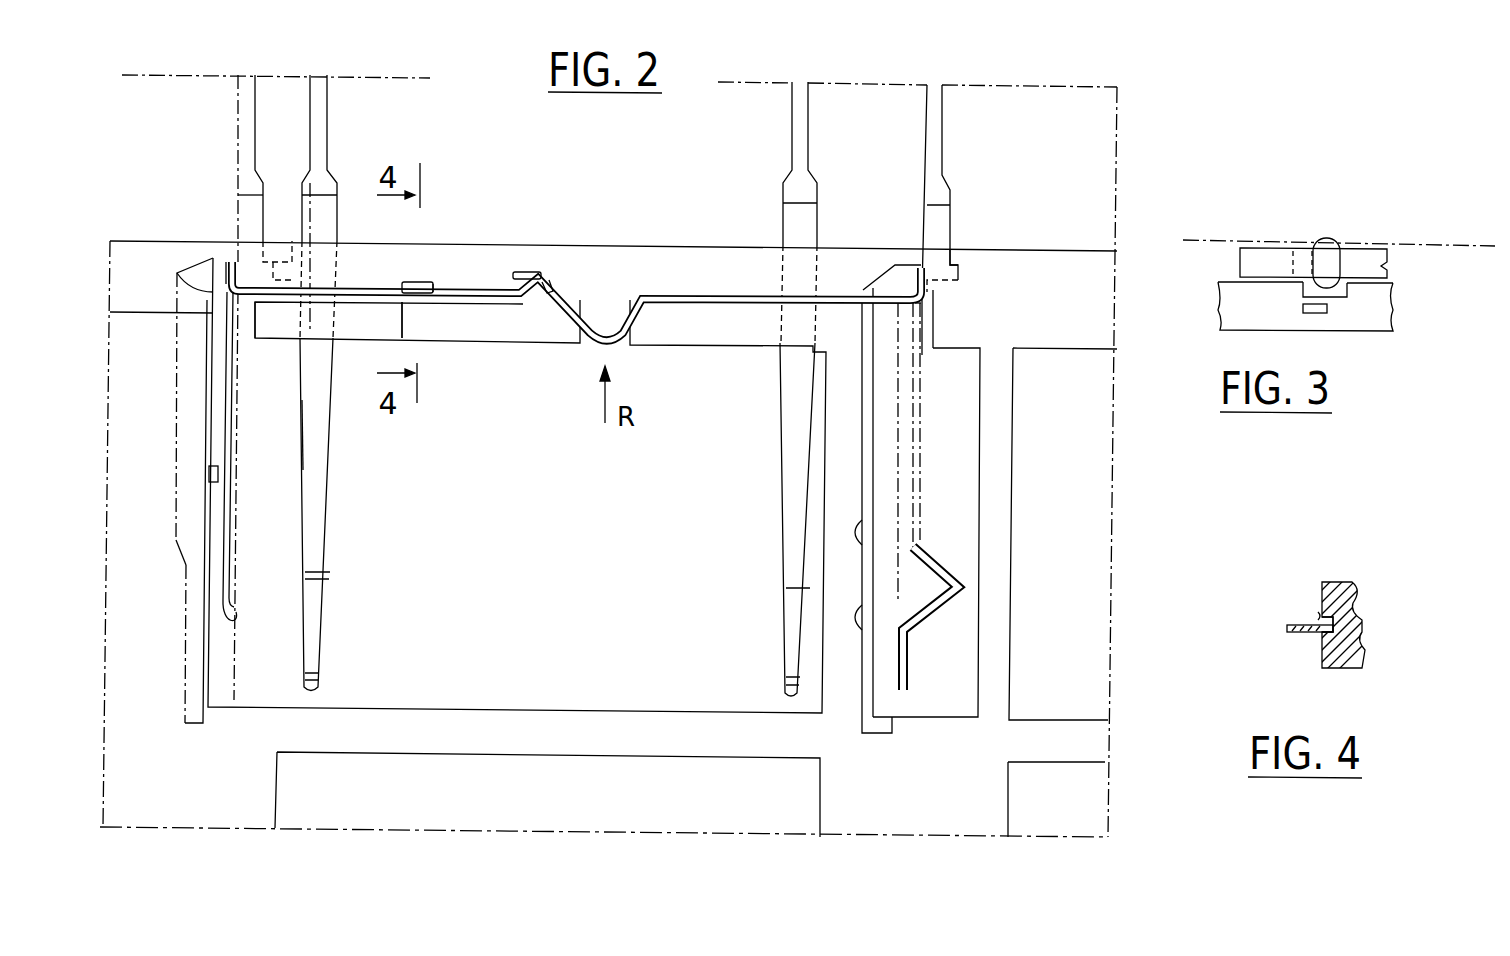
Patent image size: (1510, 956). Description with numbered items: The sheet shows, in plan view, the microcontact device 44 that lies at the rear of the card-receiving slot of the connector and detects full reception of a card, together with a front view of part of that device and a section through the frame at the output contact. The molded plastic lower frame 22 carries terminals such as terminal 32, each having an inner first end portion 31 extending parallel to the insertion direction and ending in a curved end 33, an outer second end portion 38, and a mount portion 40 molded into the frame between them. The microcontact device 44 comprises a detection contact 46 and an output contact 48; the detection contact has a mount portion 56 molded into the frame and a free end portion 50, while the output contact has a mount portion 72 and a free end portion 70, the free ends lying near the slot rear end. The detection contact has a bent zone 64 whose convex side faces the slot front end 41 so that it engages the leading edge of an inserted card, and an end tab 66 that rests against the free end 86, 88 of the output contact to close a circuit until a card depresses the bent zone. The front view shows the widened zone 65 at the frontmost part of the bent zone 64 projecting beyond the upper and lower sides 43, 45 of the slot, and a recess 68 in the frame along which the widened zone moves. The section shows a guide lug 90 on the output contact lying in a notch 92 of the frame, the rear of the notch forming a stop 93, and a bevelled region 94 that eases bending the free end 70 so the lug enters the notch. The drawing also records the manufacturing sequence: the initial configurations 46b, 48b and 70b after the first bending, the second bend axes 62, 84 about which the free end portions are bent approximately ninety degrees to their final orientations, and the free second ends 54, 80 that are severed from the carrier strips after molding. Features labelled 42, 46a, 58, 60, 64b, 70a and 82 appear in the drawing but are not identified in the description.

In FIG. 2, the lower frame 22 is at (717, 328).
In FIG. 2, the first end portion 31 is at (318, 467).
In FIG. 2, the terminal 32 is at (330, 556).
In FIG. 2, the curved end 33 is at (313, 670).
In FIG. 2, the second end portion 38 is at (346, 193).
In FIG. 2, the mount portion 40 is at (379, 304).
In FIG. 2, the slot front end 41 is at (260, 828).
In FIG. 2, the shield wall 42 is at (143, 314).
In FIG. 3, the upper side of slot 43 is at (1447, 243).
In FIG. 2, the microcontact device 44 is at (587, 278).
In FIG. 3, the lower side of slot 45 is at (1400, 288).
In FIG. 2, the detection contact 46 is at (676, 312).
In FIG. 3, the detection contact 46 is at (1357, 269).
In FIG. 2, the detent 46a is at (867, 540).
In FIG. 2, the detection contact initial configuration 46b is at (920, 457).
In FIG. 2, the output contact 48 is at (497, 308).
In FIG. 2, the output contact initial configuration 48b is at (235, 521).
In FIG. 2, the free end portion 50 is at (725, 297).
In FIG. 2, the free second end 54 is at (966, 204).
In FIG. 2, the mount portion 56 is at (963, 281).
In FIG. 2, the shoulder 58 is at (923, 270).
In FIG. 2, the hook 60 is at (910, 256).
In FIG. 2, the second bend axis 62 is at (920, 299).
In FIG. 2, the bent zone 64 is at (642, 306).
In FIG. 3, the bent zone 64 is at (1352, 257).
In FIG. 2, the contact bump 64b is at (963, 587).
In FIG. 3, the widened zone 65 is at (1326, 258).
In FIG. 2, the end tab 66 is at (530, 272).
In FIG. 3, the end tab 66 is at (1268, 262).
In FIG. 2, the recess 68 is at (613, 318).
In FIG. 3, the recess 68 is at (1357, 293).
In FIG. 2, the free end portion 70 is at (388, 288).
In FIG. 4, the free end portion 70 is at (1292, 625).
In FIG. 2, the wall 70a is at (175, 503).
In FIG. 2, the output contact free end initial configuration 70b is at (232, 563).
In FIG. 2, the mount portion 72 is at (292, 235).
In FIG. 2, the free second end 80 is at (266, 183).
In FIG. 2, the hook 82 is at (233, 262).
In FIG. 2, the second bend axis 84 is at (222, 290).
In FIG. 2, the free end of output contact 86 is at (539, 313).
In FIG. 2, the free end of output contact 88 is at (549, 278).
In FIG. 2, the guide lug 90 is at (208, 473).
In FIG. 4, the guide lug 90 is at (1363, 626).
In FIG. 4, the notch 92 is at (1360, 605).
In FIG. 2, the stop 93 is at (435, 283).
In FIG. 4, the stop 93 is at (1318, 619).
In FIG. 2, the bevelled region 94 is at (430, 320).
In FIG. 4, the bevelled region 94 is at (1325, 652).